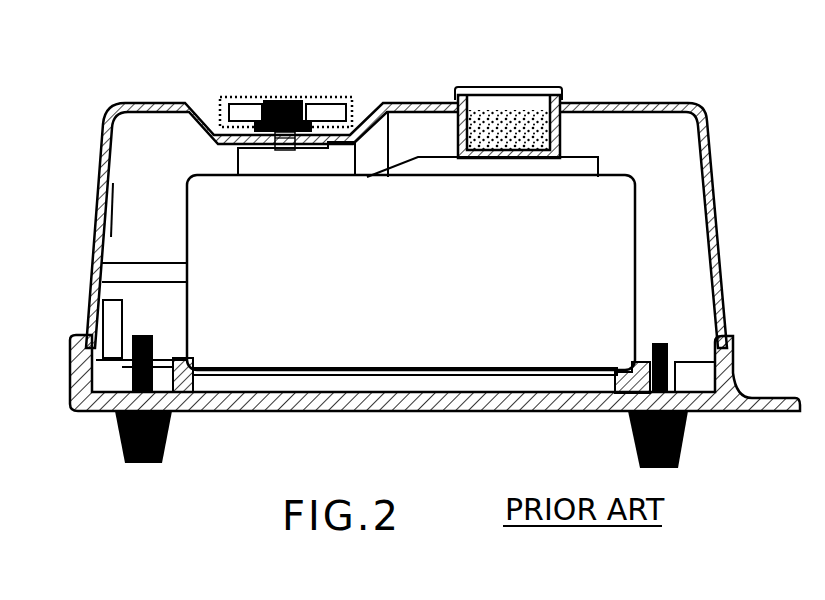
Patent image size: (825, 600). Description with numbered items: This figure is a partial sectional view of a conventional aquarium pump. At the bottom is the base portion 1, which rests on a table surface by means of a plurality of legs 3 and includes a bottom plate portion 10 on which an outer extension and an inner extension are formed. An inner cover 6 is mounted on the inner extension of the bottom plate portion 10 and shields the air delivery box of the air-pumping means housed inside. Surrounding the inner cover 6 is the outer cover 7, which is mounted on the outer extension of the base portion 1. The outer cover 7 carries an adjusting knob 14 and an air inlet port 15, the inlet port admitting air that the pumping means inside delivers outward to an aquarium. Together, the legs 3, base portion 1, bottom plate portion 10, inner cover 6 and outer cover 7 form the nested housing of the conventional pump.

The base portion 1 is at (712, 415).
The legs 3 is at (170, 433).
The inner cover 6 is at (637, 270).
The outer cover 7 is at (712, 163).
The bottom plate portion 10 is at (381, 384).
The adjusting knob 14 is at (231, 96).
The air inlet port 15 is at (532, 105).